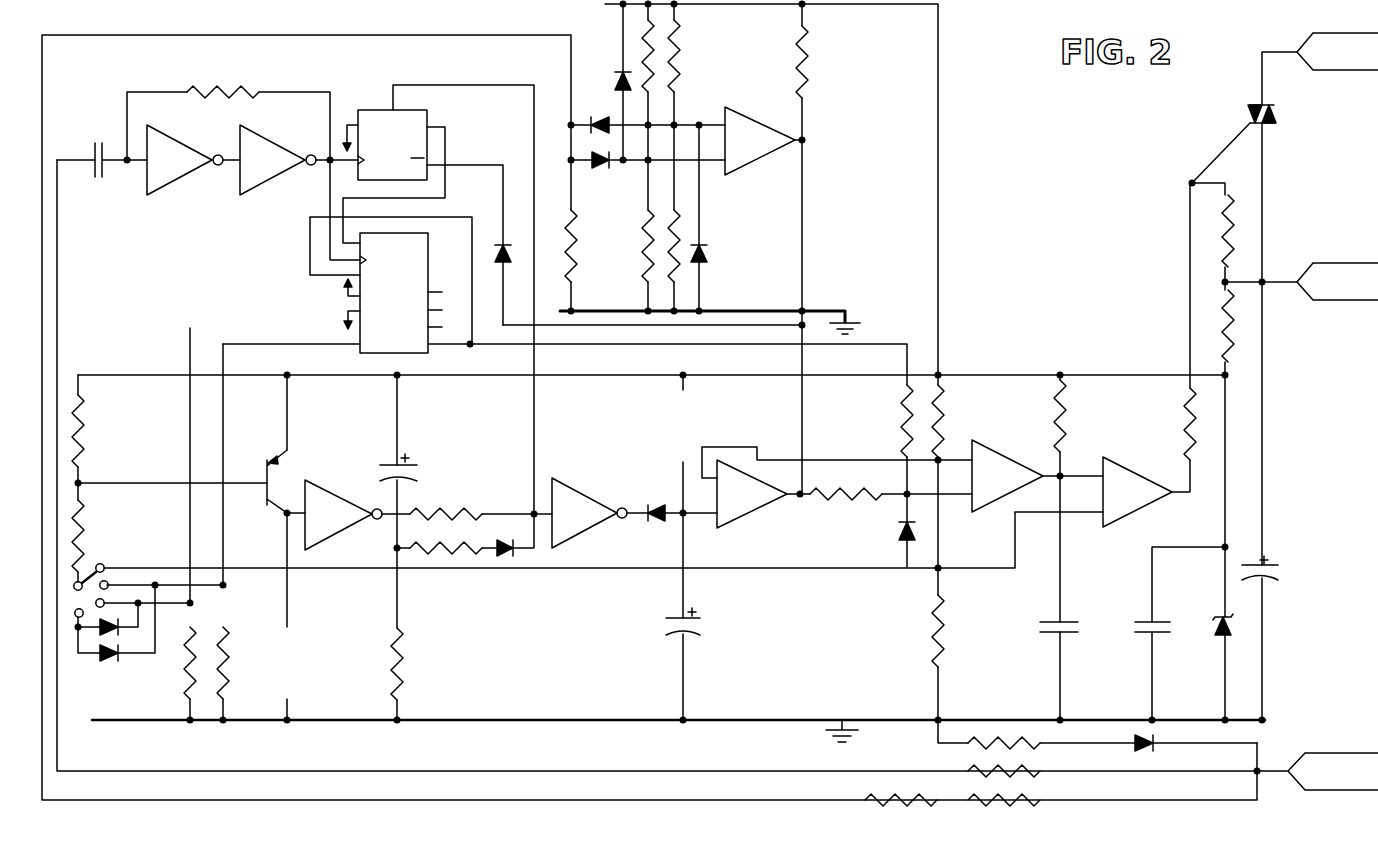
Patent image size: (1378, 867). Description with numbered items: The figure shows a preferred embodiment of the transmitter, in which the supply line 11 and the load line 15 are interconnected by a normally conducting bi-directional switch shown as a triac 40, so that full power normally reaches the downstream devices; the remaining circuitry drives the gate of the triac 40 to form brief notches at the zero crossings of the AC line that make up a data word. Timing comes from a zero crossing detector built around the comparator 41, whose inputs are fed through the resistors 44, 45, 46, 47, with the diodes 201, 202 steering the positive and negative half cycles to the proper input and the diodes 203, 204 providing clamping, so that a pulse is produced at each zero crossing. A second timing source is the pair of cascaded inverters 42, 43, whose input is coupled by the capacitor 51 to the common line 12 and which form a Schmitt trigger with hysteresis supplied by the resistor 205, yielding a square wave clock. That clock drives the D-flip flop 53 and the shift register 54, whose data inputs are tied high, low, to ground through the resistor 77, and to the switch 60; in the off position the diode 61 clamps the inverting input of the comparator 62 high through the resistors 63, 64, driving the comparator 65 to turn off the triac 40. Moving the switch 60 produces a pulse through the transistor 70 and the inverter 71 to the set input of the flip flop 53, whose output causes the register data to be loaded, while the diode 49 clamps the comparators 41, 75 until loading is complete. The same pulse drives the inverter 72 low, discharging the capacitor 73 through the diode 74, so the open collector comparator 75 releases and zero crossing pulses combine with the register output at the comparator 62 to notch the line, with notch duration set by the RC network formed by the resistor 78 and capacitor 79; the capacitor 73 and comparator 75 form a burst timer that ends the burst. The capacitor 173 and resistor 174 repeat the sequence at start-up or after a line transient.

The supply line 11 is at (1337, 281).
The common terminal line 12 is at (1317, 771).
The load line 15 is at (1337, 51).
The bi-directional switch (triac) 40 is at (1282, 113).
The comparator 41 is at (776, 128).
The inverter 42 is at (157, 185).
The inverter 43 is at (250, 185).
The resistor 44 is at (644, 50).
The resistor 45 is at (686, 52).
The resistor 46 is at (645, 254).
The resistor 47 is at (681, 231).
The diode 49 is at (516, 249).
The capacitor 51 is at (99, 140).
The D-flip flop 53 is at (423, 176).
The shift register 54 is at (391, 256).
The switch 60 is at (88, 575).
The diode 61 is at (898, 524).
The comparator 62 is at (995, 463).
The resistor 63 is at (90, 530).
The resistor 64 is at (90, 432).
The comparator 65 is at (1117, 481).
The transistor 70 is at (266, 468).
The inverter 71 is at (330, 534).
The inverter 72 is at (560, 493).
The capacitor 73 is at (695, 629).
The diode 74 is at (652, 519).
The comparator 75 is at (740, 516).
The resistor 77 is at (186, 671).
The resistor 78 is at (1068, 438).
The capacitor 79 is at (1075, 631).
The capacitor 173 is at (420, 471).
The resistor 174 is at (408, 664).
The diode 201 is at (597, 113).
The diode 202 is at (590, 151).
The diode 203 is at (611, 82).
The diode 204 is at (708, 251).
The resistor 205 is at (240, 82).